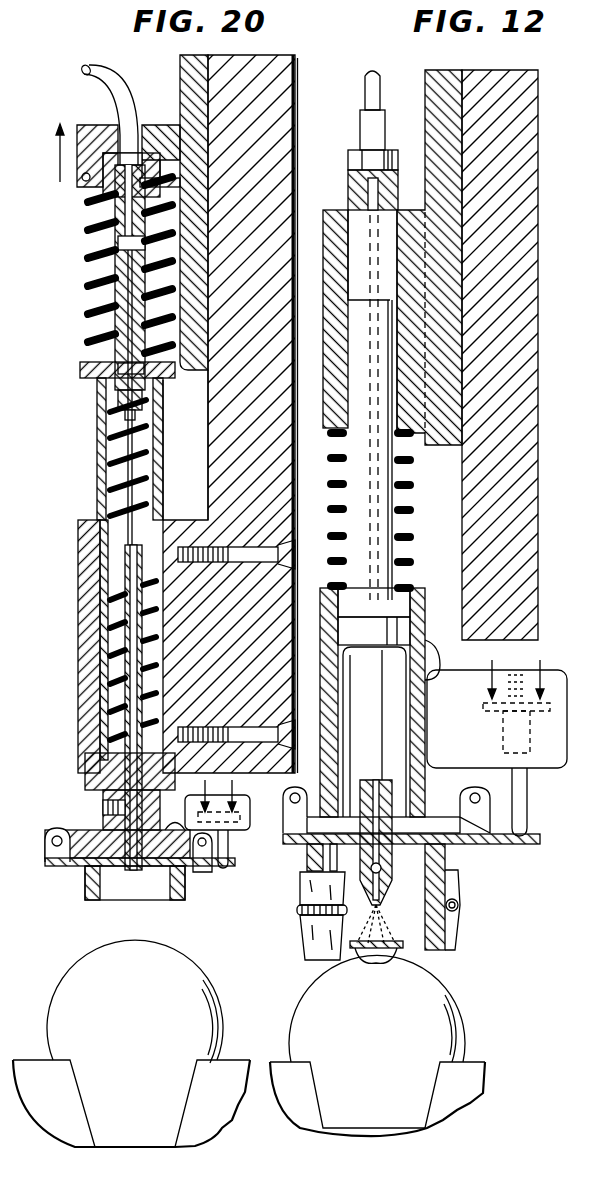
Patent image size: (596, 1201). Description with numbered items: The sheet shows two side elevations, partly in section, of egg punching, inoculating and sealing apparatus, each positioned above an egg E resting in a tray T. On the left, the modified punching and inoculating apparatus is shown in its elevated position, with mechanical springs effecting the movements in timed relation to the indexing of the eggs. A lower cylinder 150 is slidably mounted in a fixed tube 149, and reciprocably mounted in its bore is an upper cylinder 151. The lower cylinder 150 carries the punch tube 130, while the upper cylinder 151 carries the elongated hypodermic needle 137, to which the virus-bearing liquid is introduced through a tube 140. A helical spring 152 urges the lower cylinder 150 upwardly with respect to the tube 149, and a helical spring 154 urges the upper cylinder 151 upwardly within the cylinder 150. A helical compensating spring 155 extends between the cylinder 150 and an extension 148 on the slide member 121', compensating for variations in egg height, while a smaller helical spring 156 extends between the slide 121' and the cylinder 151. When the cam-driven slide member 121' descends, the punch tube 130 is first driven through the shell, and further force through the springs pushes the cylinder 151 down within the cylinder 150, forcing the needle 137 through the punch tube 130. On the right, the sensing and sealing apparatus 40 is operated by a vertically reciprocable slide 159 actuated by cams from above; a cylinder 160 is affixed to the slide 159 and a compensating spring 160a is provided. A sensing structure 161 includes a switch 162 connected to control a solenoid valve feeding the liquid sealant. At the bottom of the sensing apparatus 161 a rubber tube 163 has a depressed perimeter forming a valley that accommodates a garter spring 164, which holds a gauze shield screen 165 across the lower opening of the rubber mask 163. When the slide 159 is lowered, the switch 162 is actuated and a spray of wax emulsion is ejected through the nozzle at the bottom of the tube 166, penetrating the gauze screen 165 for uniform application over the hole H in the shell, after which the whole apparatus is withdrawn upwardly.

In FIG. 12, the injection head assembly 40 is at (427, 67).
In FIG. 20, the slide member 121' is at (208, 463).
In FIG. 20, the tube 140 is at (100, 68).
In FIG. 20, the extension 148 is at (98, 128).
In FIG. 20, the smaller helical spring 156 is at (105, 186).
In FIG. 20, the helical compensating spring 155 is at (104, 232).
In FIG. 20, the upper cylinder 151 is at (108, 336).
In FIG. 20, the lower cylinder 150 is at (98, 406).
In FIG. 20, the hypodermic needle 137 is at (126, 440).
In FIG. 20, the helical spring 154 is at (108, 470).
In FIG. 20, the punch tube 130 is at (99, 626).
In FIG. 20, the helical spring 152 is at (100, 675).
In FIG. 20, the fixed tube 149 is at (96, 737).
In FIG. 12, the slide 159 is at (436, 77).
In FIG. 12, the cylinder 160 is at (350, 212).
In FIG. 12, the compensating spring 160a is at (412, 522).
In FIG. 12, the tube 166 is at (392, 798).
In FIG. 12, the switch 162 is at (497, 748).
In FIG. 12, the sensing structure 161 is at (262, 855).
In FIG. 12, the garter spring 164 is at (304, 912).
In FIG. 12, the gauze shield screen 165 is at (432, 947).
In FIG. 12, the rubber tube 163 is at (418, 933).
In FIG. 12, the hole H is at (355, 965).
In FIG. 20, the egg E is at (100, 960).
In FIG. 12, the egg E is at (440, 1025).
In FIG. 20, the tray T is at (35, 1065).
In FIG. 12, the tray T is at (465, 1082).